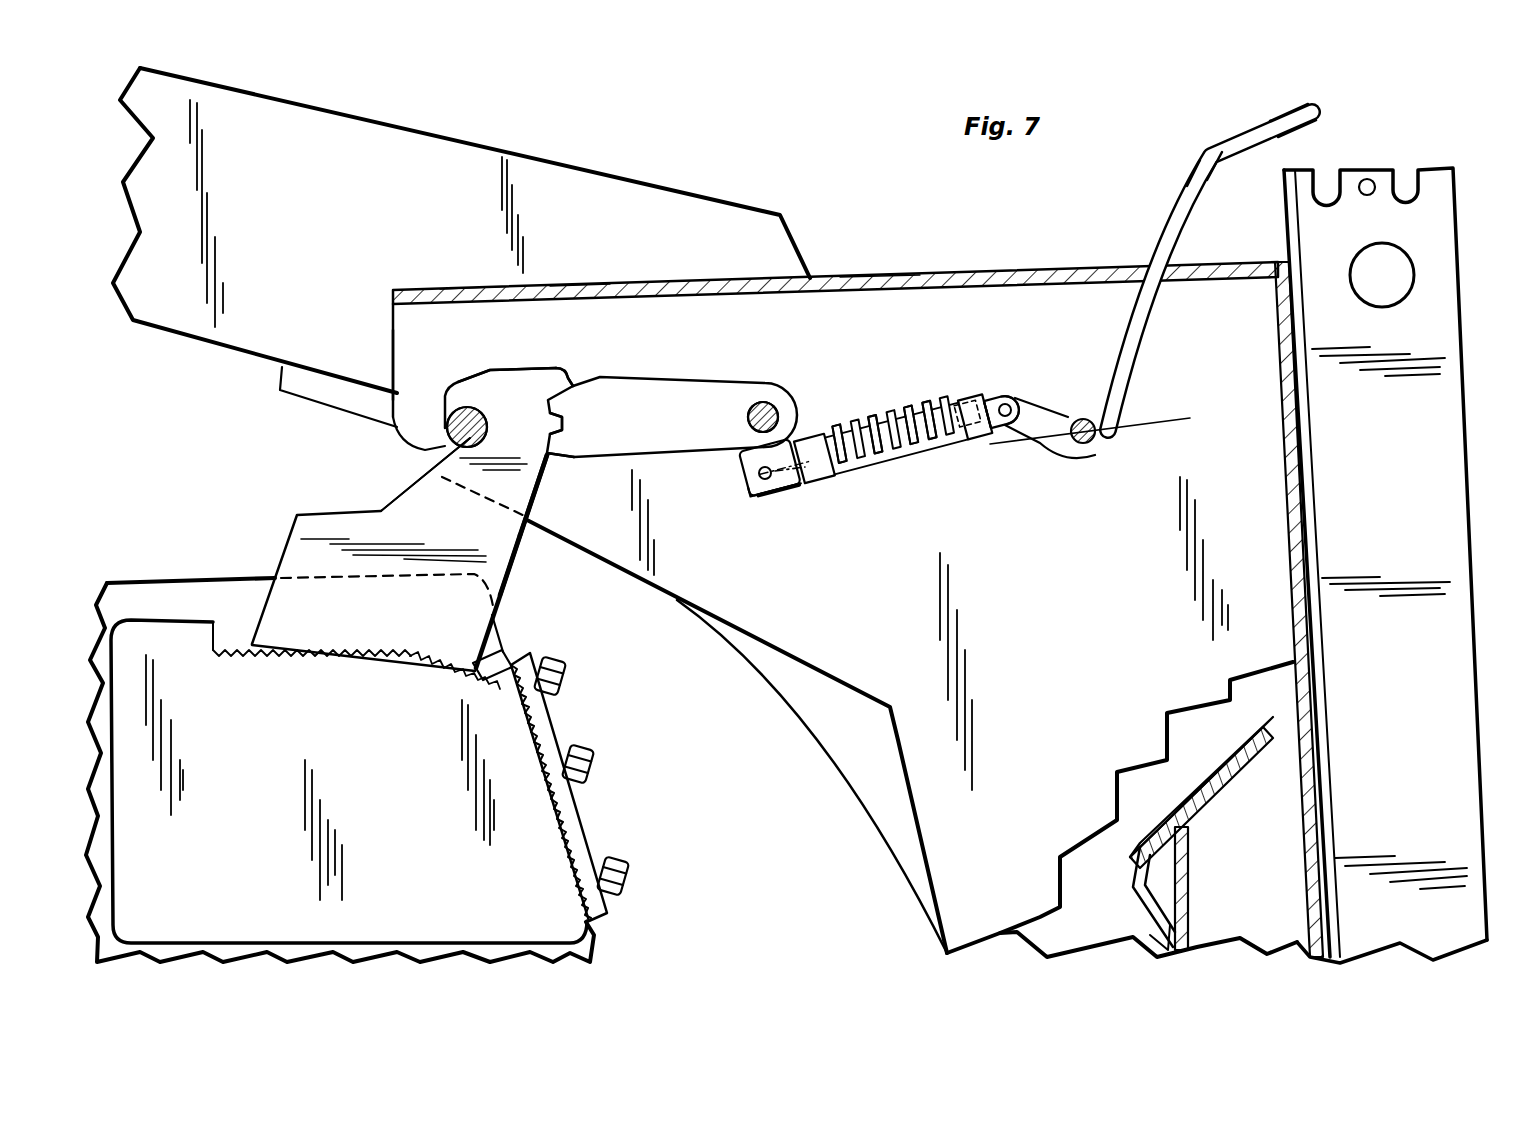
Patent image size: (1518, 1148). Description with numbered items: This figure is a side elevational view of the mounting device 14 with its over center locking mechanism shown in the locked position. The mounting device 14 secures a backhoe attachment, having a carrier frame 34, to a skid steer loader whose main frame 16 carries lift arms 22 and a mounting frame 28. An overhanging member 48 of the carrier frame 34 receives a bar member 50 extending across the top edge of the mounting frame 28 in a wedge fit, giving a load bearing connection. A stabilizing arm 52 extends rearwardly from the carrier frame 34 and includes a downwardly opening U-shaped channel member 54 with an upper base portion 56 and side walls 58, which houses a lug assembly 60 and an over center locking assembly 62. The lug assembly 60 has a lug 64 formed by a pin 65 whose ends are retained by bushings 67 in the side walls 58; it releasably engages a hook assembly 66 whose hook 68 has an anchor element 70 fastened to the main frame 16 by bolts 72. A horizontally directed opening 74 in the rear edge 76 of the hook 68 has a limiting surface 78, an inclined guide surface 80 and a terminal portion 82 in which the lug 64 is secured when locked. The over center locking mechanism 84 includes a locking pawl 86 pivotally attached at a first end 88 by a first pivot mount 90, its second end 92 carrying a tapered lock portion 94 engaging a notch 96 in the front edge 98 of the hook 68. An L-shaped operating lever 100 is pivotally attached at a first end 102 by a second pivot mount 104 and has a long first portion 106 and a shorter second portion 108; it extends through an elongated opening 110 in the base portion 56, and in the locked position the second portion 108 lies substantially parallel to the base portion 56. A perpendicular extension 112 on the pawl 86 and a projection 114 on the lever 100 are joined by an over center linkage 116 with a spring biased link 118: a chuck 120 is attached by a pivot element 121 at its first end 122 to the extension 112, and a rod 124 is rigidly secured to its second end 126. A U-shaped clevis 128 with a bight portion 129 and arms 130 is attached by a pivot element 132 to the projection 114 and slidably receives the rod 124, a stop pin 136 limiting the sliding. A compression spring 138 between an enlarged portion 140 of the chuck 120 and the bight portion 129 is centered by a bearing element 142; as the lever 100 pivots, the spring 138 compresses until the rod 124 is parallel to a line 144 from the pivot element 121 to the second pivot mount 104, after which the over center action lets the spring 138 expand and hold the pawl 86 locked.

The mounting device 14 is at (565, 564).
The main frame 16 is at (168, 585).
The lift arms 22 is at (555, 177).
The mounting frame 28 is at (1150, 937).
The carrier frame 34 is at (940, 820).
The overhanging member 48 is at (1130, 830).
The bar member 50 is at (1133, 878).
The stabilizing arm 52 is at (420, 316).
The channel member 54 is at (469, 310).
The base portion 56 is at (572, 290).
The side walls 58 is at (403, 352).
The lug assembly 60 is at (447, 421).
The over center locking assembly 62 is at (880, 447).
The lug 64 is at (413, 452).
The pin 65 is at (485, 420).
The hook assembly 66 is at (508, 586).
The bushings 67 is at (484, 496).
The hook 68 is at (529, 485).
The anchor element 70 is at (570, 822).
The bolts 72 is at (590, 752).
The horizontally directed opening 74 is at (420, 476).
The rear edge 76 is at (462, 382).
The limiting surface 78 is at (324, 511).
The inclined guide surface 80 is at (404, 484).
The terminal portion 82 is at (465, 395).
The over center locking mechanism 84 is at (795, 491).
The locking pawl 86 is at (688, 383).
The first end 88 is at (787, 390).
The first pivot mount 90 is at (780, 418).
The second end 92 is at (562, 434).
The tapered lock portion 94 is at (573, 386).
The notch 96 is at (547, 422).
The front edge 98 is at (521, 550).
The operating lever 100 is at (1140, 323).
The first end 102 is at (1100, 450).
The second pivot mount 104 is at (1071, 455).
The long first portion 106 is at (1165, 232).
The second portion 108 is at (1222, 150).
The elongated opening 110 is at (872, 277).
The perpendicular extension 112 is at (748, 457).
The projection 114 is at (1013, 428).
The over center linkage 116 is at (822, 431).
The spring biased link 118 is at (854, 456).
The chuck 120 is at (781, 494).
The pivot element 121 is at (746, 506).
The first end 122 is at (752, 483).
The rod 124 is at (928, 456).
The second end 126 is at (893, 475).
The clevis 128 is at (997, 388).
The bight portion 129 is at (975, 397).
The arms 130 is at (988, 434).
The pivot element 132 is at (1013, 398).
The stop pin 136 is at (964, 481).
The compression spring 138 is at (862, 426).
The enlarged portion 140 is at (840, 483).
The bearing element 142 is at (850, 478).
The line 144 is at (1158, 415).